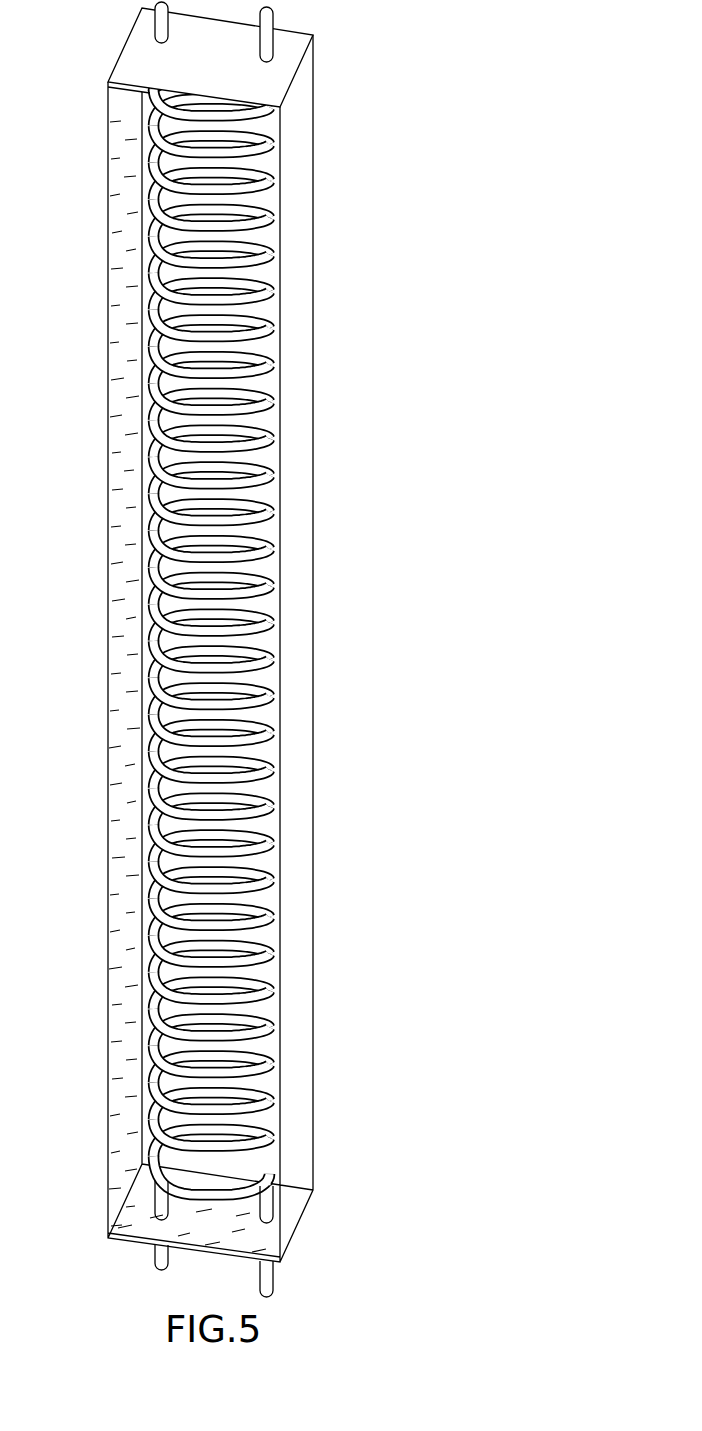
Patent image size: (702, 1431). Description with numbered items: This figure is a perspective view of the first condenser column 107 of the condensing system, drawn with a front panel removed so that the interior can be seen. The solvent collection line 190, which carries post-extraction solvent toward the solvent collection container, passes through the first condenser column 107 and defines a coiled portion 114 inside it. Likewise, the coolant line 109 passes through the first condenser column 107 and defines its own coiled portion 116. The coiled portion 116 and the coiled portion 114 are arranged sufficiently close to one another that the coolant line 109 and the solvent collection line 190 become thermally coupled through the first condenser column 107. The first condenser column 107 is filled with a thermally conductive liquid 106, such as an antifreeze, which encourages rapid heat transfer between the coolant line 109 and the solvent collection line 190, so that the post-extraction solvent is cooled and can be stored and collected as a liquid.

The thermally conductive liquid 106 is at (142, 602).
The first condenser column 107 is at (123, 75).
The coolant line 109 is at (153, 12).
The coiled portion 114 is at (275, 150).
The coiled portion 116 is at (150, 97).
The solvent collection line 190 is at (274, 17).